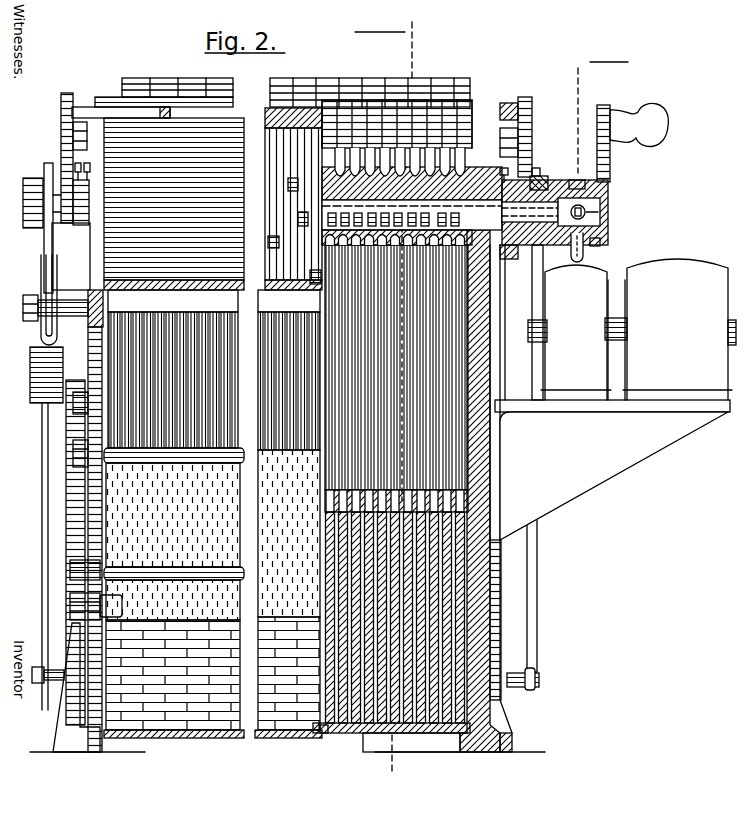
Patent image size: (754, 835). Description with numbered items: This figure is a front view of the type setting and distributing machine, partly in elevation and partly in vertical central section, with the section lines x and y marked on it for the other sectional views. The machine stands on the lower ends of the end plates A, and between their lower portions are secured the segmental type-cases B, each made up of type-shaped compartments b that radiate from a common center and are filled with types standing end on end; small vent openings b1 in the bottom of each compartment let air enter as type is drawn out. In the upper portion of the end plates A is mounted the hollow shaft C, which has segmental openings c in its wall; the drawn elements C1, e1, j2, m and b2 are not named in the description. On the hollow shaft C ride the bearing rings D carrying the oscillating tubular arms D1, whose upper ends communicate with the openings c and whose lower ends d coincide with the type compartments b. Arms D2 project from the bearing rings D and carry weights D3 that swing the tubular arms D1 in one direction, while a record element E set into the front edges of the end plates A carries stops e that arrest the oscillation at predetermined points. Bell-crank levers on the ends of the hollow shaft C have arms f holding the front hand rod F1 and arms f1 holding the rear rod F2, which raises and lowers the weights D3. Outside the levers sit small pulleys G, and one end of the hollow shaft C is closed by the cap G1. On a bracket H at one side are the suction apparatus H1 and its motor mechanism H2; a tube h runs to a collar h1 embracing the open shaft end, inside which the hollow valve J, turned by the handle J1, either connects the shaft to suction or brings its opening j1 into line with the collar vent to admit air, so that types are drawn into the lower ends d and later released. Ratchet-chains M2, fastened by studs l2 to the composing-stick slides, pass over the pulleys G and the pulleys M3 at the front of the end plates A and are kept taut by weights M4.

The end plates A is at (88, 350).
The type-cases B is at (368, 733).
The hollow shaft C is at (412, 222).
The header bracket C1 is at (525, 242).
The bearing rings D is at (158, 417).
The tubular arms D1 is at (224, 364).
The arms D2 is at (466, 158).
The weights D3 is at (215, 78).
The record element E is at (268, 166).
The stops e is at (298, 218).
The valve e1 is at (288, 184).
The hand rod F1 is at (84, 92).
The rod F2 is at (500, 112).
The arms f is at (62, 132).
The arms f1 is at (532, 174).
The pulleys G is at (44, 172).
The cap G1 is at (26, 180).
The bracket H is at (612, 470).
The suction apparatus H1 is at (576, 332).
The motor mechanism H2 is at (632, 329).
The tube h is at (588, 262).
The collar h1 is at (593, 226).
The hollow valve J is at (586, 203).
The handle J1 is at (612, 152).
The opening j1 is at (600, 243).
The port j2 is at (600, 212).
The studs l2 is at (517, 693).
The ratchet-chain mechanism M2 is at (54, 262).
The pulleys M3 is at (42, 282).
The weights M4 is at (30, 362).
The rack m is at (68, 520).
The type compartments b is at (404, 733).
The vent openings b1 is at (344, 733).
The port b2 is at (577, 180).
The openings c is at (397, 212).
The lower ends d is at (462, 503).
The section line x is at (397, 396).
The section line y is at (575, 111).